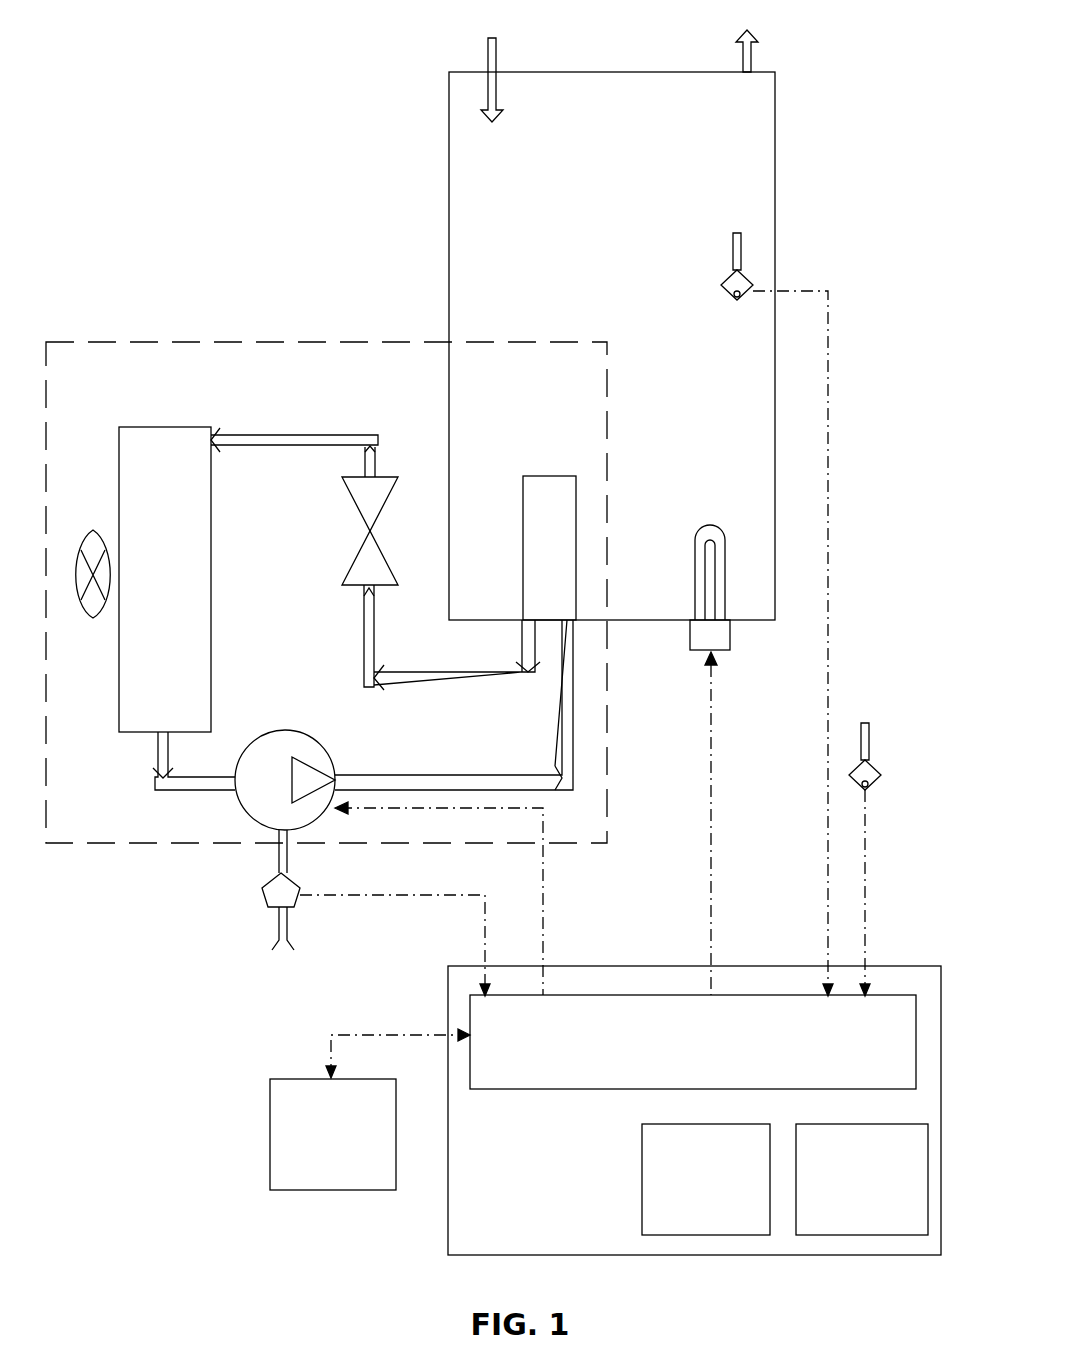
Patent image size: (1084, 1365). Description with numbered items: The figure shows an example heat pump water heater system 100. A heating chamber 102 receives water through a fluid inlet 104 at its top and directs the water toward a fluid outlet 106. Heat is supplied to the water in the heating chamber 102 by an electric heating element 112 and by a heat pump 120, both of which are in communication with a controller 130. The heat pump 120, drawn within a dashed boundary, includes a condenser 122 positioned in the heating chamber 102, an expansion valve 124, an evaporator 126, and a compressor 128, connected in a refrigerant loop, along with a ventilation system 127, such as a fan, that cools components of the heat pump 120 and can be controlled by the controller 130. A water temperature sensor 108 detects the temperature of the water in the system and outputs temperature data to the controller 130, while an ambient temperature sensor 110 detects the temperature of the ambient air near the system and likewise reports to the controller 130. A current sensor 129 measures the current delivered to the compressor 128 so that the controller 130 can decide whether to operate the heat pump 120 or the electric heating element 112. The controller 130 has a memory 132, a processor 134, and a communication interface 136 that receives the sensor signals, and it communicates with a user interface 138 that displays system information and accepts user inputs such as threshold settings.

The water heater system 100 is at (248, 62).
The heating chamber 102 is at (449, 155).
The fluid inlet 104 is at (492, 30).
The fluid outlet 106 is at (748, 28).
The water temperature sensor 108 is at (747, 282).
The ambient temperature sensor 110 is at (872, 762).
The electric heating element 112 is at (726, 590).
The heat pump 120 is at (108, 340).
The condenser 122 is at (523, 558).
The expansion valve 124 is at (342, 560).
The evaporator 126 is at (148, 578).
The ventilation system 127 is at (93, 530).
The compressor 128 is at (280, 735).
The current sensor 129 is at (268, 895).
The controller 130 is at (539, 1204).
The memory 132 is at (689, 1204).
The processor 134 is at (845, 1204).
The communication interface 136 is at (676, 1068).
The user interface 138 is at (316, 1174).